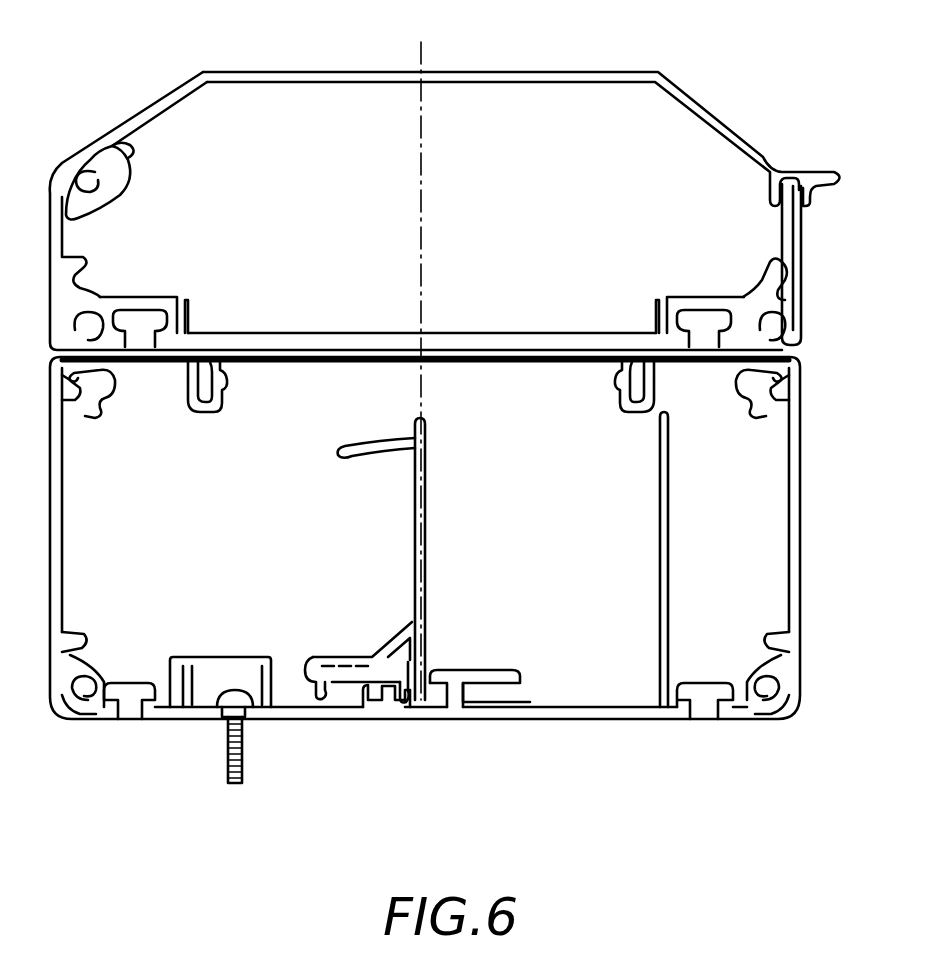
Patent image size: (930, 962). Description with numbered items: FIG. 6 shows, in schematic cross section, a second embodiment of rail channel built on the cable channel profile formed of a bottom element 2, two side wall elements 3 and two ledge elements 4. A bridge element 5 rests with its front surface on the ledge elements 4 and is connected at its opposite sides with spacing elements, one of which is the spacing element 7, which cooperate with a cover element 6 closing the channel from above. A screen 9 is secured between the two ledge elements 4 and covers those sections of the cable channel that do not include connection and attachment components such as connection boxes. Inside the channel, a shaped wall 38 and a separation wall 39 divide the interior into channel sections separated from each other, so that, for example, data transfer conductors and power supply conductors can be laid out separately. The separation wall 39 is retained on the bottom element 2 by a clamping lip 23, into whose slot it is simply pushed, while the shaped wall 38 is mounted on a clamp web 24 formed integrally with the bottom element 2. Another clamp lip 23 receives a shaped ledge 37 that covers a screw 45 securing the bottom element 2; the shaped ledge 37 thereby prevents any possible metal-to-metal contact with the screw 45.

The bottom element 2 is at (328, 712).
The side wall element 3 is at (57, 555).
The ledge element 4 is at (148, 362).
The bridge element 5 is at (348, 333).
The cover element 6 is at (266, 72).
The spacing element 7 is at (793, 228).
The screen 9 is at (512, 362).
The clamping lip 23 is at (195, 710).
The clamp web 24 is at (367, 690).
The shaped ledge 37 is at (265, 688).
The shaped wall 38 is at (426, 600).
The separation wall 39 is at (665, 572).
The screw 45 is at (236, 790).